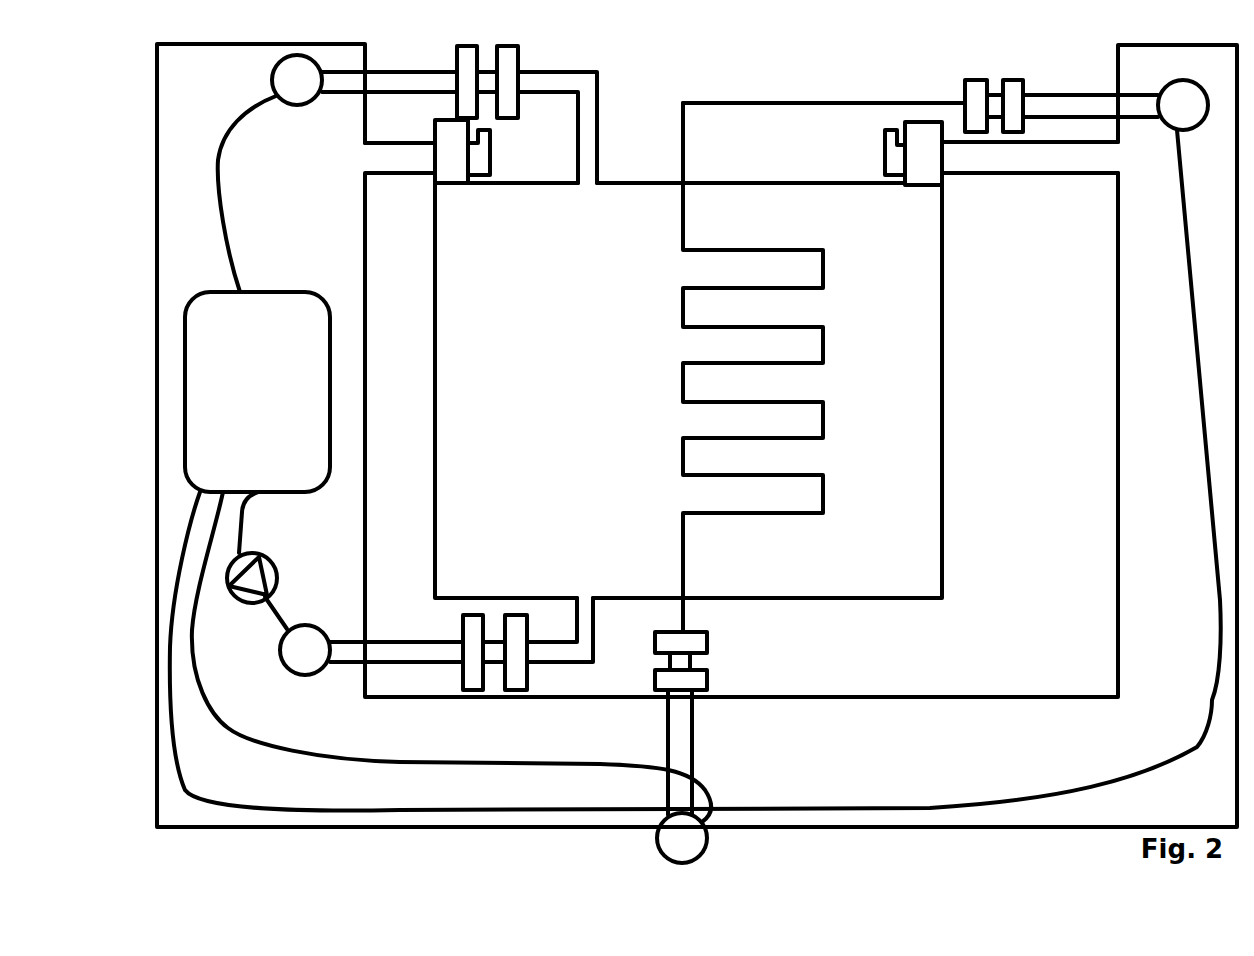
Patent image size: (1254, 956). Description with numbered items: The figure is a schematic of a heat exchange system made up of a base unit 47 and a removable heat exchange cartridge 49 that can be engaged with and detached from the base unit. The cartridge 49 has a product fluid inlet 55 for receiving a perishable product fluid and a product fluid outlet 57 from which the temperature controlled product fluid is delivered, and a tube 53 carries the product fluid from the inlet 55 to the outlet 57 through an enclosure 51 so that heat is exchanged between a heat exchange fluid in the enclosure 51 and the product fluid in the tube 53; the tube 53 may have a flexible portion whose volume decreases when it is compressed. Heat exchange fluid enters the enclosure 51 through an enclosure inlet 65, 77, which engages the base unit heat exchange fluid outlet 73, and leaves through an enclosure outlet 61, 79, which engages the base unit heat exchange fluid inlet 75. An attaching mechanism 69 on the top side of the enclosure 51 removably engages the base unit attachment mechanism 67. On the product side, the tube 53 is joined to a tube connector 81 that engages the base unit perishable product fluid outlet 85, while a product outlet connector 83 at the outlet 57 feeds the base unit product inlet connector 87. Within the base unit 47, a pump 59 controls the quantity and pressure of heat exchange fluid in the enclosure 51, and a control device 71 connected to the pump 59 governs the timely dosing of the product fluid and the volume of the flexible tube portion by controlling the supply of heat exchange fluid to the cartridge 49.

The base unit 47 is at (200, 250).
The removable heat exchange cartridge 49 is at (868, 88).
The enclosure 51 is at (943, 348).
The tube 53 is at (823, 278).
The product fluid inlet 55 is at (828, 102).
The product fluid outlet 57 is at (688, 607).
The pump 59 is at (274, 570).
The enclosure outlet 61 is at (596, 622).
The enclosure inlet 65 is at (627, 183).
The base unit attachment mechanism 67 is at (598, 163).
The attaching mechanism 69 is at (437, 165).
The control device 71 is at (183, 440).
The base unit heat exchange fluid outlet 73 is at (467, 60).
The base unit heat exchange fluid inlet 75 is at (483, 691).
The enclosure inlet 77 is at (518, 60).
The enclosure outlet 79 is at (514, 691).
The tube connector 81 is at (964, 92).
The product outlet connector 83 is at (646, 633).
The base unit perishable product fluid outlet 85 is at (1025, 92).
The base unit product inlet connector 87 is at (693, 680).